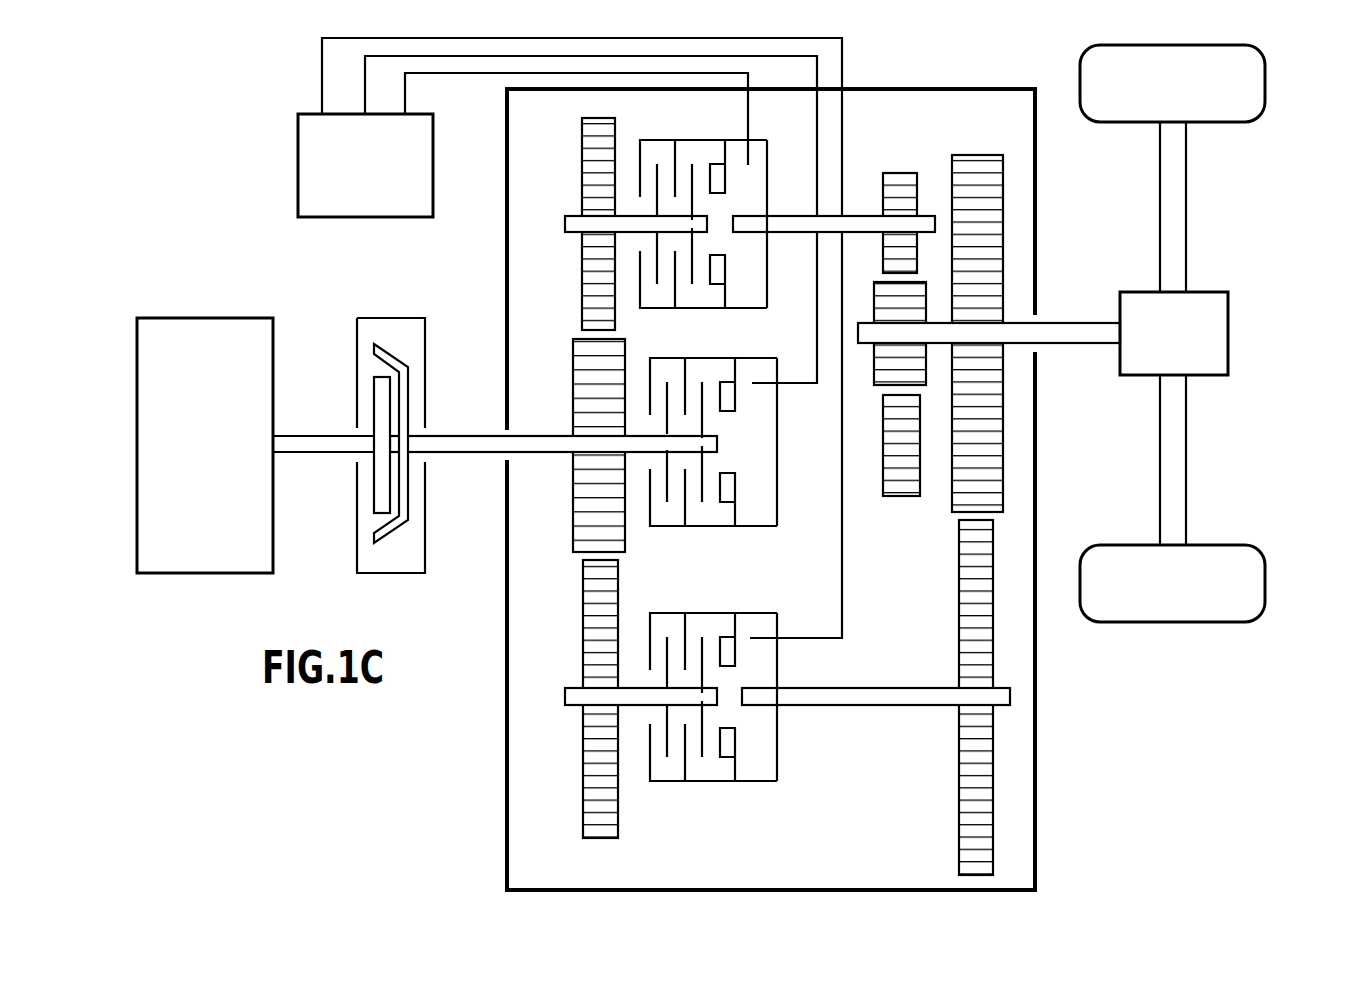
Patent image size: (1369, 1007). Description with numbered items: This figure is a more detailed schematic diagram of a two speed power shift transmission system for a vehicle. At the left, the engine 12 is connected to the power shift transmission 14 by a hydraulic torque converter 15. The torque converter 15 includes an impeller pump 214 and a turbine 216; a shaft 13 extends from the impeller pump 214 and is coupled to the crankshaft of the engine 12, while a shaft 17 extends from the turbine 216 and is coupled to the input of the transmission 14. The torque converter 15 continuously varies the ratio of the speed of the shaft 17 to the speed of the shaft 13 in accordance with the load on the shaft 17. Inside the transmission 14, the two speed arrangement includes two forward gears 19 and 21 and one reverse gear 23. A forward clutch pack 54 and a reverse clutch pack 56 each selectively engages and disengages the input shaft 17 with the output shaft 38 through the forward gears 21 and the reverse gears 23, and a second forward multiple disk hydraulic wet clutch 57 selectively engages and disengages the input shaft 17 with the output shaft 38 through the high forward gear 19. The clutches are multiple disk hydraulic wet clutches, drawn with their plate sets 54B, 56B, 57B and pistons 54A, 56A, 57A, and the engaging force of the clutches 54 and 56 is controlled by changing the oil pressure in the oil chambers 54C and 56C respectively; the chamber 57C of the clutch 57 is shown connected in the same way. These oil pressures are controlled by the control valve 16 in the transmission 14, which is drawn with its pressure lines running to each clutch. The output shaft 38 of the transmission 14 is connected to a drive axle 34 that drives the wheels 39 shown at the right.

The engine 12 is at (207, 318).
The shaft 13 is at (317, 453).
The power shift transmission 14 is at (508, 690).
The hydraulic torque converter 15 is at (392, 318).
The control valve 16 is at (298, 164).
The shaft 17 is at (467, 453).
The high forward gear 19 is at (573, 762).
The forward gears 21 is at (582, 285).
The reverse gears 23 is at (900, 498).
The drive axle 34 is at (1229, 332).
The output shaft 38 is at (1079, 322).
The wheels 39 is at (1265, 80).
The forward clutch pack 54 is at (657, 309).
The first clutch piston 54A is at (729, 153).
The first clutch plates 54B is at (673, 153).
The oil chamber 54C is at (757, 152).
The reverse clutch pack 56 is at (778, 511).
The second clutch piston 56A is at (738, 512).
The second clutch plates 56B is at (683, 512).
The oil chamber 56C is at (762, 372).
The second forward multiple disk hydraulic wet clutch 57 is at (777, 745).
The third clutch piston 57A is at (738, 766).
The third clutch plates 57B is at (683, 766).
The third clutch housing 57C is at (764, 625).
The impeller pump 214 is at (374, 403).
The turbine 216 is at (408, 403).